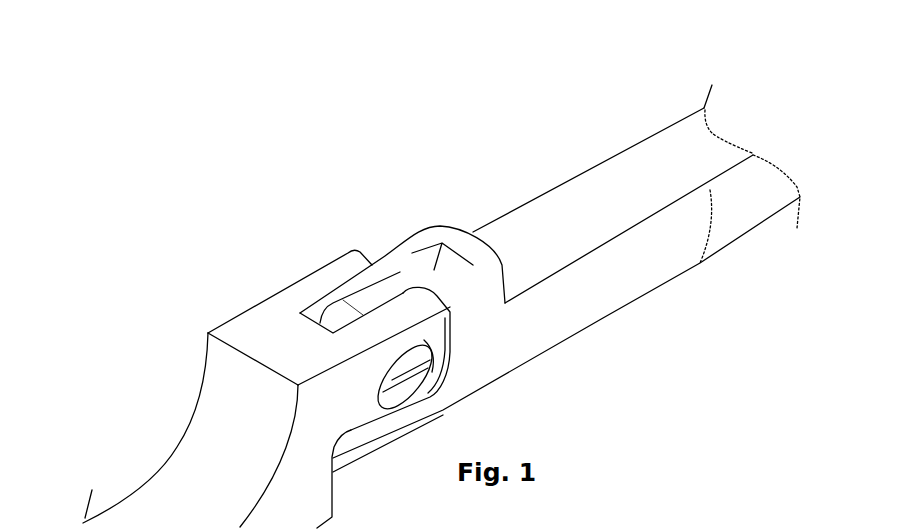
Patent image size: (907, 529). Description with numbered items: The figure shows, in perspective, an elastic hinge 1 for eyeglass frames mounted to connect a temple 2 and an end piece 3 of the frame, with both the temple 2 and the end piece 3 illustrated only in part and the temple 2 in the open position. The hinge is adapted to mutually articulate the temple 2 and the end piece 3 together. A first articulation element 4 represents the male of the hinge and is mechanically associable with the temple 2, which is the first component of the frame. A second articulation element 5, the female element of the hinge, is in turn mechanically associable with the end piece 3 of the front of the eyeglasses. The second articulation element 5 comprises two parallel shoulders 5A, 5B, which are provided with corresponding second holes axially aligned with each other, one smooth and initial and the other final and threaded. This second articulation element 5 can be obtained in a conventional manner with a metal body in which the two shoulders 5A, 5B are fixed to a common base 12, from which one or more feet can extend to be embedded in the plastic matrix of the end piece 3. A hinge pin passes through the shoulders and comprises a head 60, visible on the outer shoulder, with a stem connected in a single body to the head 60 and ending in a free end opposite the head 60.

The elastic hinge 1 is at (278, 146).
The temple 2 is at (577, 193).
The end piece 3 is at (192, 467).
The first articulation element 4 is at (453, 157).
The second articulation element 5 is at (240, 262).
The shoulder 5A is at (350, 413).
The shoulder 5B is at (315, 284).
The common base 12 is at (288, 349).
The head 60 is at (403, 388).